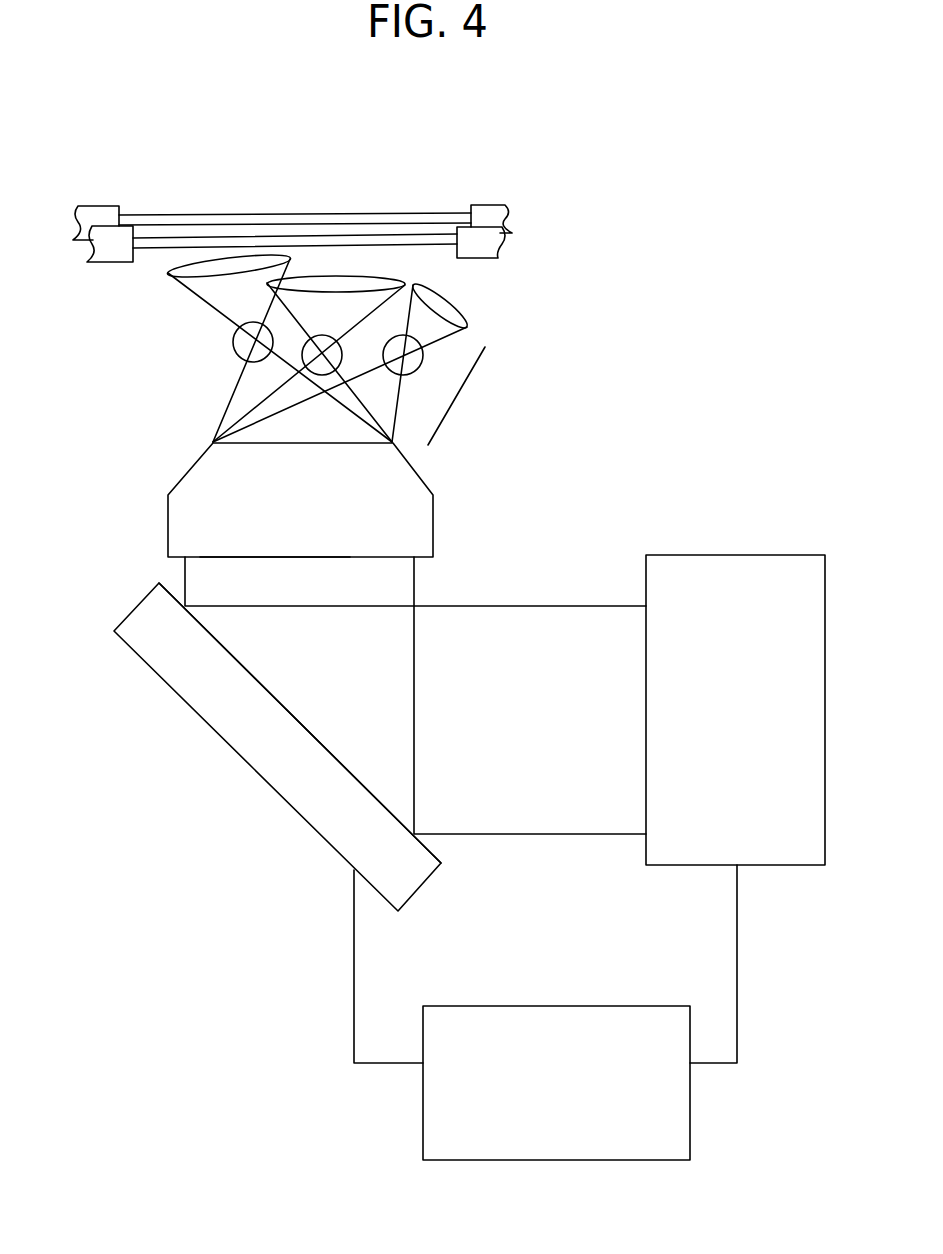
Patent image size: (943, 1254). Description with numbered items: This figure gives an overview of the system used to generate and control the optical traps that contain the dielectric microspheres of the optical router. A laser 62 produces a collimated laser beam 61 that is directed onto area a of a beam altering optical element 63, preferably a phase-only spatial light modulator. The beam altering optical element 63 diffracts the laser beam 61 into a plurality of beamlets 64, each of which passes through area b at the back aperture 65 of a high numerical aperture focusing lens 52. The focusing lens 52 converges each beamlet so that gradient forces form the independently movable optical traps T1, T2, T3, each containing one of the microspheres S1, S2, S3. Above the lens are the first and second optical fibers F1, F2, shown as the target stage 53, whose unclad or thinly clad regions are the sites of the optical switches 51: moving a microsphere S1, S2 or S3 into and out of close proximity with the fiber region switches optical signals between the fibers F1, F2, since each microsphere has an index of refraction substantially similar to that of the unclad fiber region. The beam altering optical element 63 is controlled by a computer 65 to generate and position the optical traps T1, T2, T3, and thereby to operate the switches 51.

The target stage with films 53 is at (470, 154).
The first optical fiber F1 is at (296, 244).
The second optical fiber F2 is at (292, 222).
The optical trap T1 is at (452, 299).
The optical trap T2 is at (318, 281).
The optical trap T3 is at (172, 276).
The microsphere S1 is at (422, 367).
The microsphere S2 is at (342, 355).
The microsphere S3 is at (235, 346).
The optical switch 51 is at (458, 396).
The focusing lens 52 is at (409, 546).
The area at back aperture b is at (277, 555).
The beamlets 64 is at (313, 599).
The laser beam 61 is at (484, 833).
The beam altering optical element 63 is at (342, 845).
The area of beam altering optical element a is at (308, 737).
The laser 62 is at (778, 838).
The back aperture / computer 65 is at (666, 1039).